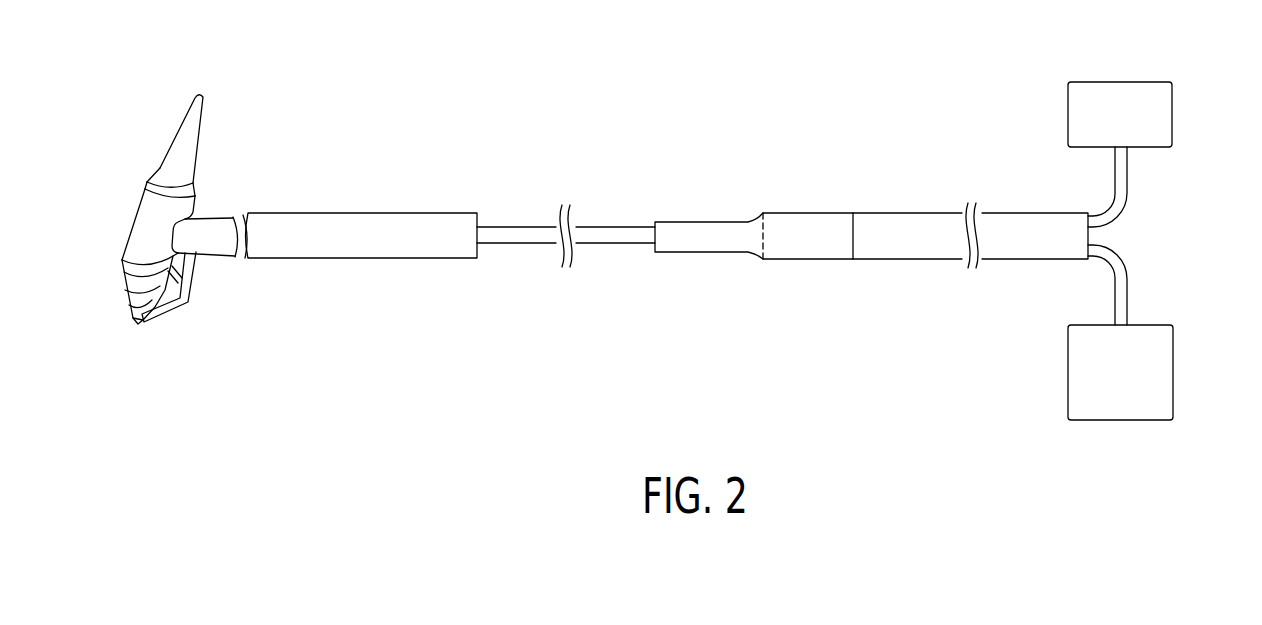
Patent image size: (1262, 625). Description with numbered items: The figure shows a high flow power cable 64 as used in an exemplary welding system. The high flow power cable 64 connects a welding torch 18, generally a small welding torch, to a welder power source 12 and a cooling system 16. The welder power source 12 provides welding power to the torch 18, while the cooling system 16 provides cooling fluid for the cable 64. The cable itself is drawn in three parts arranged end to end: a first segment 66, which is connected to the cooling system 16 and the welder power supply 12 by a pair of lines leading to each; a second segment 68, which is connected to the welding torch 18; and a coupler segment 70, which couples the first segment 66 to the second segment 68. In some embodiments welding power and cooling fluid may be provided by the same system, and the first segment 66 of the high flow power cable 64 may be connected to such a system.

The high flow power cable 64 is at (513, 43).
The welding torch 18 is at (361, 213).
The second segment 68 is at (609, 243).
The coupler segment 70 is at (810, 259).
The first segment 66 is at (1031, 259).
The cooling system 16 is at (1172, 118).
The welder power source 12 is at (1173, 373).